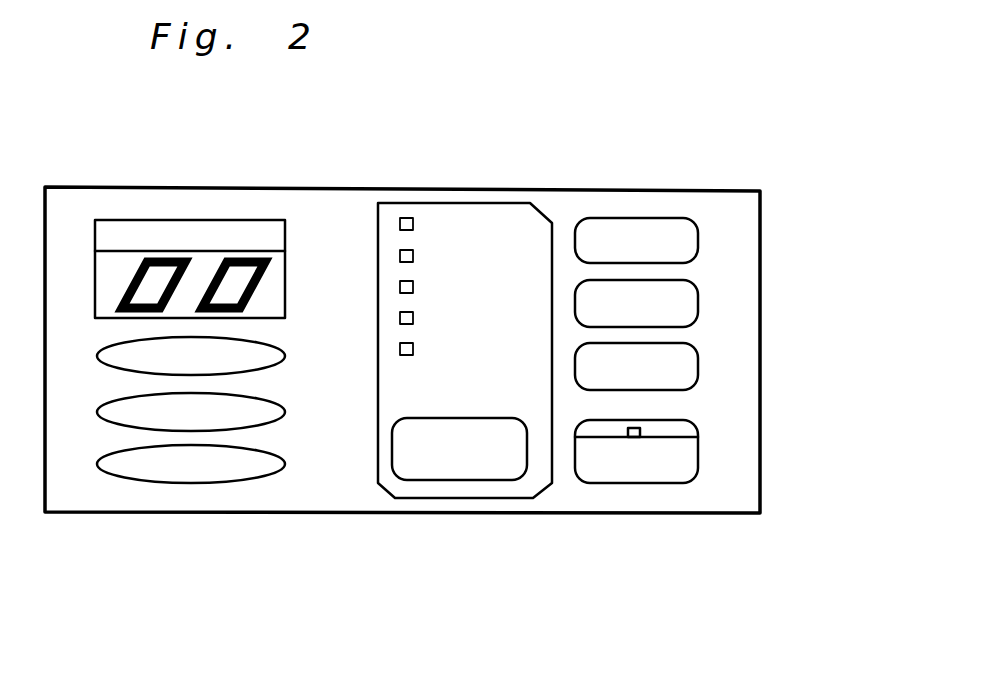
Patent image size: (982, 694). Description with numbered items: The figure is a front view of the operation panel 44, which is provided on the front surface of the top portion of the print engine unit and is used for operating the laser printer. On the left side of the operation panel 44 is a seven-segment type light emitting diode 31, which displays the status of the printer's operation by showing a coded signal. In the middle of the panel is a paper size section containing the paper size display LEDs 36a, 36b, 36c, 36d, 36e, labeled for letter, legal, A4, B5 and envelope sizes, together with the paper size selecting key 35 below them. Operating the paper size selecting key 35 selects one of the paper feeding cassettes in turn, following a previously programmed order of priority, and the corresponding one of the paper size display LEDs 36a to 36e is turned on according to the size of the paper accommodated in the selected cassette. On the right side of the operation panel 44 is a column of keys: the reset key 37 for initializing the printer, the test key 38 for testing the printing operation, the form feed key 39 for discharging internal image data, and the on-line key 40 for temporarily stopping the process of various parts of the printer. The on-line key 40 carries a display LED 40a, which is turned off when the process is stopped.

The operation panel 44 is at (587, 125).
The light emitting diode 31 is at (183, 220).
The paper size selecting key 35 is at (477, 481).
The paper size display LED 36a is at (400, 223).
The paper size display LED 36b is at (400, 255).
The paper size display LED 36c is at (400, 287).
The paper size display LED 36d is at (400, 317).
The paper size display LED 36e is at (400, 350).
The reset key 37 is at (698, 232).
The test key 38 is at (698, 292).
The form feed key 39 is at (698, 377).
The on-line key 40 is at (698, 467).
The display LED 40a is at (640, 430).